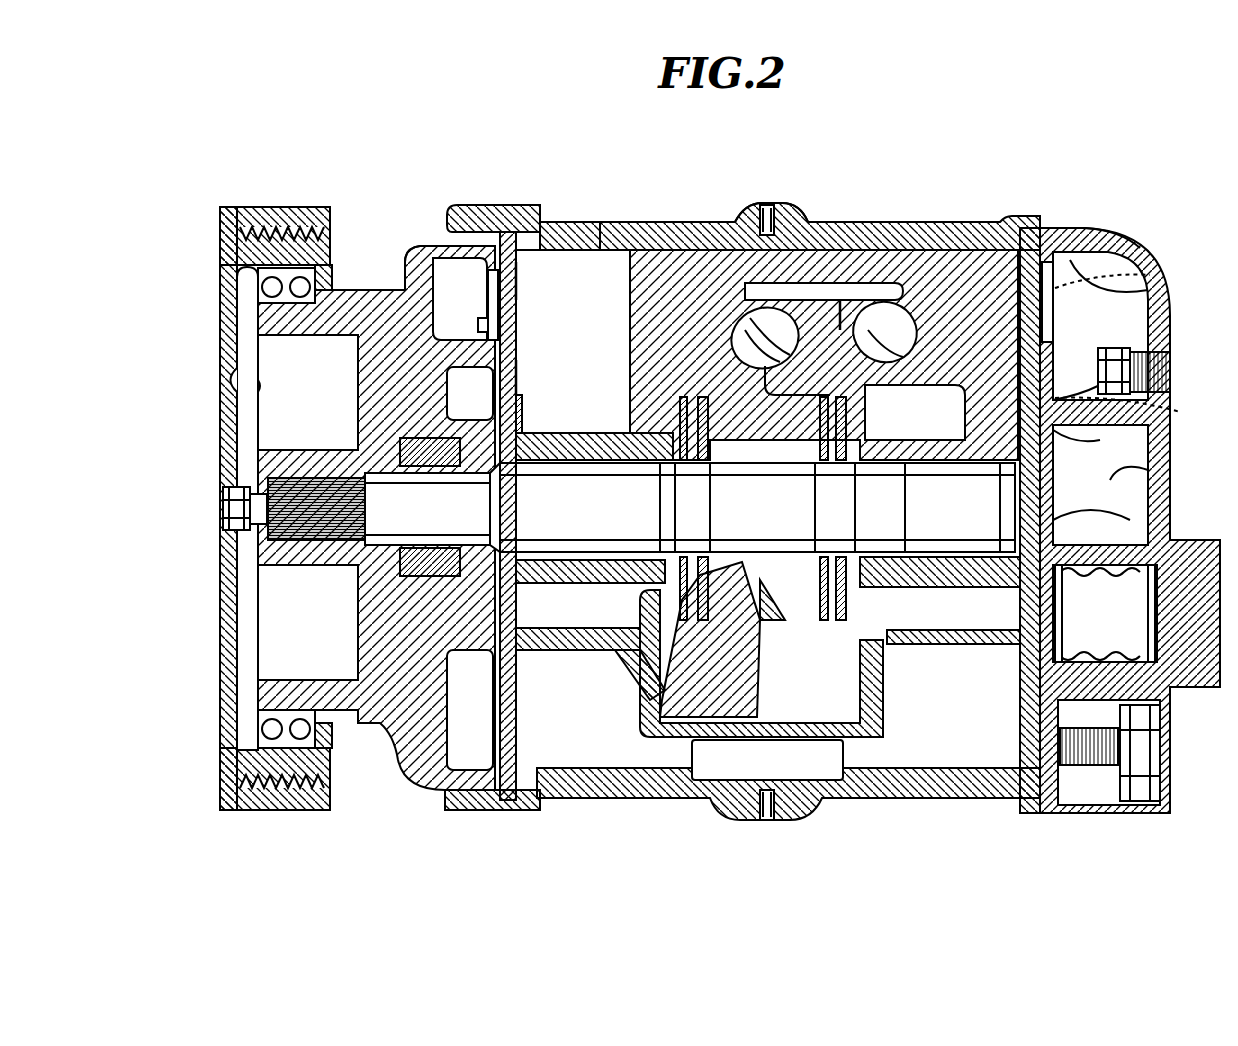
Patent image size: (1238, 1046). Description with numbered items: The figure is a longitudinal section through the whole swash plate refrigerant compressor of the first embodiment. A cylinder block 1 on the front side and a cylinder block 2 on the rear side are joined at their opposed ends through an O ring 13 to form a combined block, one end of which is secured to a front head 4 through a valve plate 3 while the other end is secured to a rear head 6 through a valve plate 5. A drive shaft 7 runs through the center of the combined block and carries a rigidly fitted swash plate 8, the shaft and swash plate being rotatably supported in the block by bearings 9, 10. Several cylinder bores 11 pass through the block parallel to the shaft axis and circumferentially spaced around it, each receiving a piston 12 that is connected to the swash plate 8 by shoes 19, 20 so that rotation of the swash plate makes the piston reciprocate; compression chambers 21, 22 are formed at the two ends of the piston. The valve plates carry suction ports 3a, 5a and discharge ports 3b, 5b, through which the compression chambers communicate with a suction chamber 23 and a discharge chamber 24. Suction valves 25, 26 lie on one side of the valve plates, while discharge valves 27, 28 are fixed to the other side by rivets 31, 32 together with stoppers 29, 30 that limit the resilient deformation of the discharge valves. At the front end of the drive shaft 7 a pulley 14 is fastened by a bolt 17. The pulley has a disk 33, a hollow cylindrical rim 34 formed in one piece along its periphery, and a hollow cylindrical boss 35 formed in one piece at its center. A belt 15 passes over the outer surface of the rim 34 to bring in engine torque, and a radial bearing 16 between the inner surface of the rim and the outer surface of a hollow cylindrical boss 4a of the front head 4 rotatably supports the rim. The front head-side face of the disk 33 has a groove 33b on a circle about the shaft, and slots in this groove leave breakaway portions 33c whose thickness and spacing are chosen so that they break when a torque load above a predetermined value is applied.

The cylinder block 1 is at (622, 222).
The cylinder block 2 is at (884, 250).
The valve plate 3 is at (508, 212).
The suction port 3a is at (520, 372).
The discharge port 3b is at (519, 282).
The front head 4 is at (432, 240).
The boss 4a is at (300, 312).
The valve plate 5 is at (1032, 228).
The suction port 5a is at (1139, 414).
The discharge port 5b is at (1150, 275).
The rear head 6 is at (1150, 252).
The drive shaft 7 is at (565, 525).
The swash plate 8 is at (841, 300).
The bearing 9 is at (580, 568).
The bearing 10 is at (680, 602).
The cylinder bore 11 is at (561, 222).
The piston 12 is at (803, 258).
The O ring 13 is at (760, 208).
The pulley 14 is at (200, 242).
The belt 15 is at (282, 207).
The radial bearing 16 is at (262, 285).
The bolt 17 is at (232, 502).
The shoe 19 is at (742, 322).
The shoe 20 is at (912, 300).
The compression chamber 21 is at (573, 341).
The compression chamber 22 is at (970, 300).
The suction chamber 23 is at (471, 393).
The discharge chamber 24 is at (460, 299).
The suction valve 25 is at (520, 410).
The suction valve 26 is at (962, 402).
The discharge valve 27 is at (462, 205).
The discharge valve 28 is at (1088, 227).
The stopper 29 is at (412, 262).
The stopper 30 is at (1098, 252).
The rivet 31 is at (430, 300).
The rivet 32 is at (1168, 352).
The disk 33 is at (237, 345).
The groove 33b is at (258, 386).
The breakaway portion 33c is at (234, 386).
The rim 34 is at (338, 207).
The boss 35 is at (308, 560).